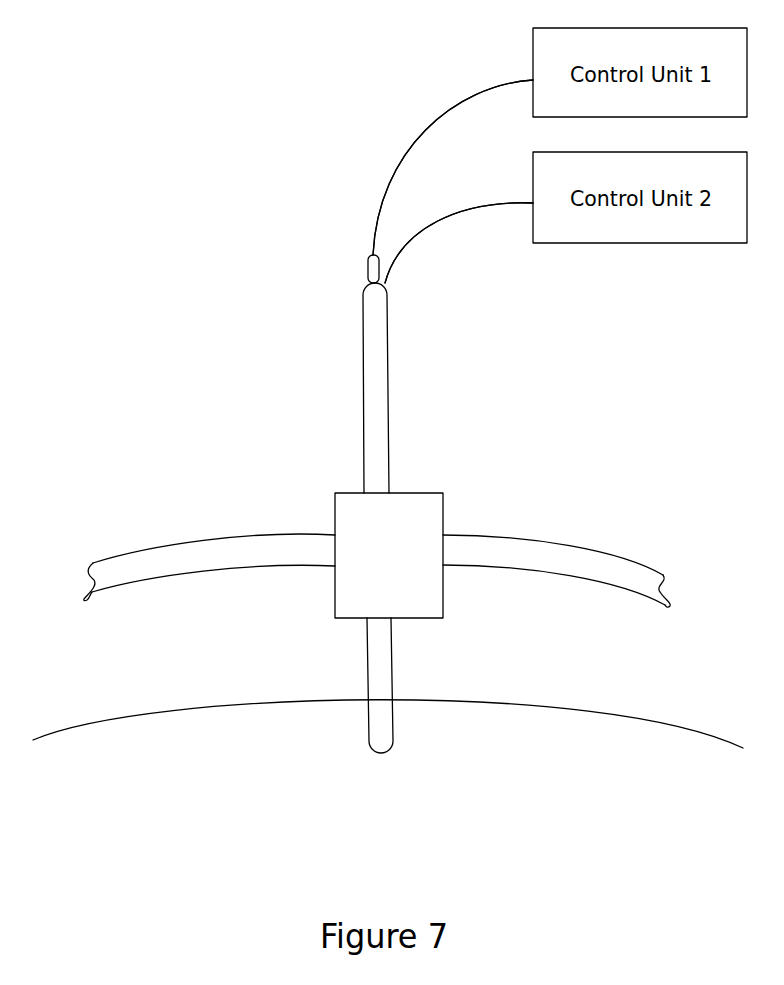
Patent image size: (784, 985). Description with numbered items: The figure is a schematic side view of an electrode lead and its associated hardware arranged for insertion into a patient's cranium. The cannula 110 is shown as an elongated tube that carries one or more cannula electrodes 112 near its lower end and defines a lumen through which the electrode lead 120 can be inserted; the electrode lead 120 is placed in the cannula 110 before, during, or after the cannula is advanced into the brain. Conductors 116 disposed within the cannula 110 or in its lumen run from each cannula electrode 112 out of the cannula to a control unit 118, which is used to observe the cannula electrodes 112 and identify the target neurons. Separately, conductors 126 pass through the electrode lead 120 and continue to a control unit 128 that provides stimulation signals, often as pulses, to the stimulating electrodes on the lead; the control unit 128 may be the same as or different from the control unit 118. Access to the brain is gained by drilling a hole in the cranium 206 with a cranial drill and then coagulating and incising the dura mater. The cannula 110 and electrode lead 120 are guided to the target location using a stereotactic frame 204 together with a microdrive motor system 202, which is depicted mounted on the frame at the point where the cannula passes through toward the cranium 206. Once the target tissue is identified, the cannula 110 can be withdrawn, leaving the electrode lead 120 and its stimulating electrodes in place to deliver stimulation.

The cannula 110 is at (387, 357).
The cannula electrode 112 is at (380, 707).
The conductors 116 is at (422, 237).
The control unit 118 is at (528, 156).
The electrode lead 120 is at (368, 262).
The conductors 126 is at (398, 158).
The control unit 128 is at (530, 32).
The microdrive motor system 202 is at (443, 597).
The stereotactic frame 204 is at (495, 538).
The cranium 206 is at (127, 712).